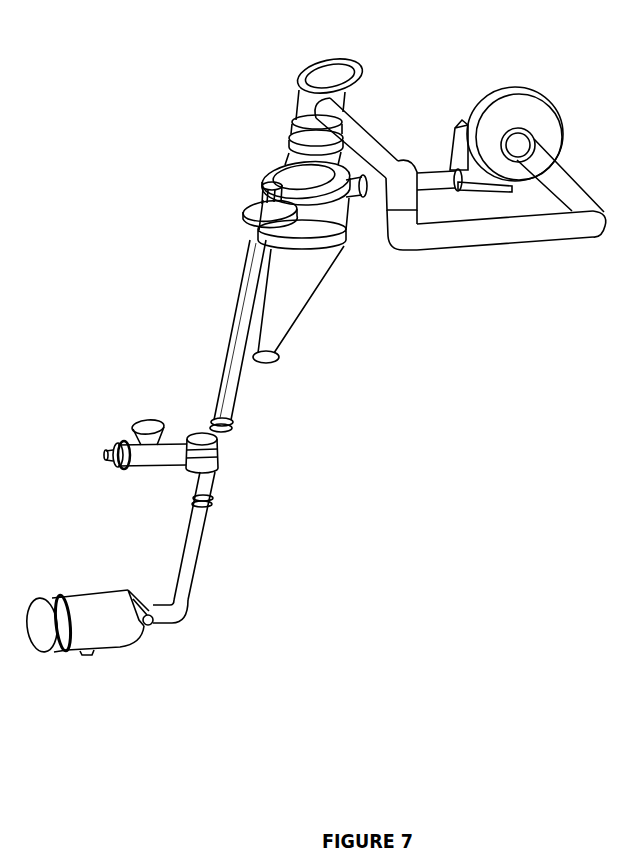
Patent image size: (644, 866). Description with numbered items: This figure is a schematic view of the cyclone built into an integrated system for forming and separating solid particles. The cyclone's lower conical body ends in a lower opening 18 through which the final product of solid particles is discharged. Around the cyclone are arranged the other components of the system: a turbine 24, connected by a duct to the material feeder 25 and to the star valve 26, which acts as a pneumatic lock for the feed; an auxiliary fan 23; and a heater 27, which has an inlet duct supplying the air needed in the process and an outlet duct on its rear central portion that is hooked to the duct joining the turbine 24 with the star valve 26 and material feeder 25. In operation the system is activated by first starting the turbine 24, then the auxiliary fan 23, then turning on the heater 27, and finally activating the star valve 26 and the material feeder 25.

The lower opening 18 is at (273, 365).
The auxiliary fan 23 is at (553, 78).
The turbine 24 is at (252, 205).
The material feeder 25 is at (127, 438).
The star valve 26 is at (220, 452).
The heater 27 is at (103, 585).